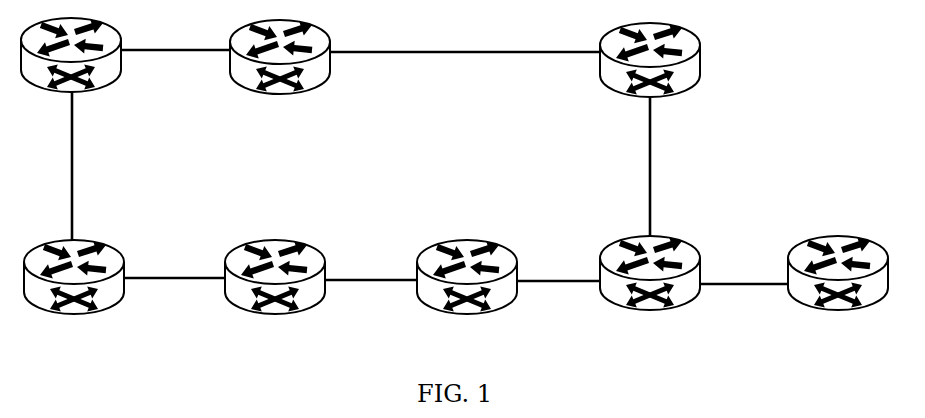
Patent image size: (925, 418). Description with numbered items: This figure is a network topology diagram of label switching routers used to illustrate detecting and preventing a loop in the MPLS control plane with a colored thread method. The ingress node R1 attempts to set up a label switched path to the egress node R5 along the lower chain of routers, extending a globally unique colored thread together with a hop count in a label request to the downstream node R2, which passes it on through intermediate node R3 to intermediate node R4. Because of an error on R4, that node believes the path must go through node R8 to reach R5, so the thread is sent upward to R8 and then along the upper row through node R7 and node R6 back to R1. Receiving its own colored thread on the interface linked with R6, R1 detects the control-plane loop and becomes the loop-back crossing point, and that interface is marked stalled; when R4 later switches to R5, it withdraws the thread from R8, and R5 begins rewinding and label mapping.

The ingress node R1 is at (74, 293).
The downstream node R2 is at (275, 293).
The intermediate node R3 is at (467, 293).
The intermediate node R4 is at (650, 291).
The egress node R5 is at (838, 290).
The node R6 is at (71, 70).
The node R7 is at (280, 75).
The old next-hop node R8 is at (650, 75).